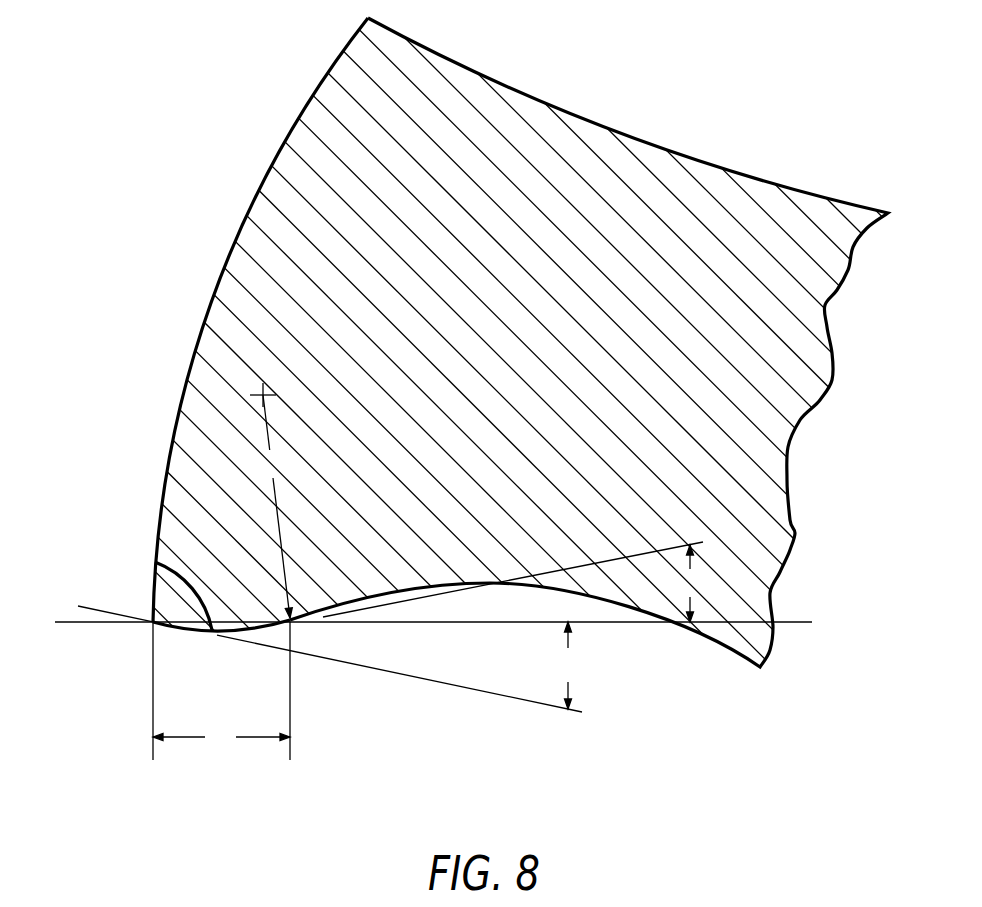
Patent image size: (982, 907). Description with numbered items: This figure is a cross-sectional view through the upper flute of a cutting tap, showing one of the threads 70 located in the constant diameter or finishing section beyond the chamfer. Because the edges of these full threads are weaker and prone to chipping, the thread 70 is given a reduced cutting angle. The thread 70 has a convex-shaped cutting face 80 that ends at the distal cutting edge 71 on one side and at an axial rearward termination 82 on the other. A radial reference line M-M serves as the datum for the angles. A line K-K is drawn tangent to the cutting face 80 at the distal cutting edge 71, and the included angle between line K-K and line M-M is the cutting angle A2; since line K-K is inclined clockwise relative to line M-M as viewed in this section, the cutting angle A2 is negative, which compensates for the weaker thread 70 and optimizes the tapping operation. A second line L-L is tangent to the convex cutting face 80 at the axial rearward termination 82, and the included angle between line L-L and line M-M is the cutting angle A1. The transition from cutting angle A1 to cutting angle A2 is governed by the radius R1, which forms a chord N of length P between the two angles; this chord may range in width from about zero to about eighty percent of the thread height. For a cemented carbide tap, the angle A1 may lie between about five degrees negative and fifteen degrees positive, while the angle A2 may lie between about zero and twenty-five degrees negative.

The cutting thread 70 is at (347, 73).
The cutting edge 71 is at (152, 626).
The convex-shaped cutting face 80 is at (198, 632).
The axial rearward termination 82 is at (292, 623).
The chord N is at (154, 562).
The radial reference line M is at (436, 622).
The tangent line K is at (332, 656).
The tangent line L is at (522, 567).
The radius R1 is at (271, 500).
The chord length P is at (221, 737).
The cutting angle A1 is at (689, 583).
The cutting angle A2 is at (568, 665).